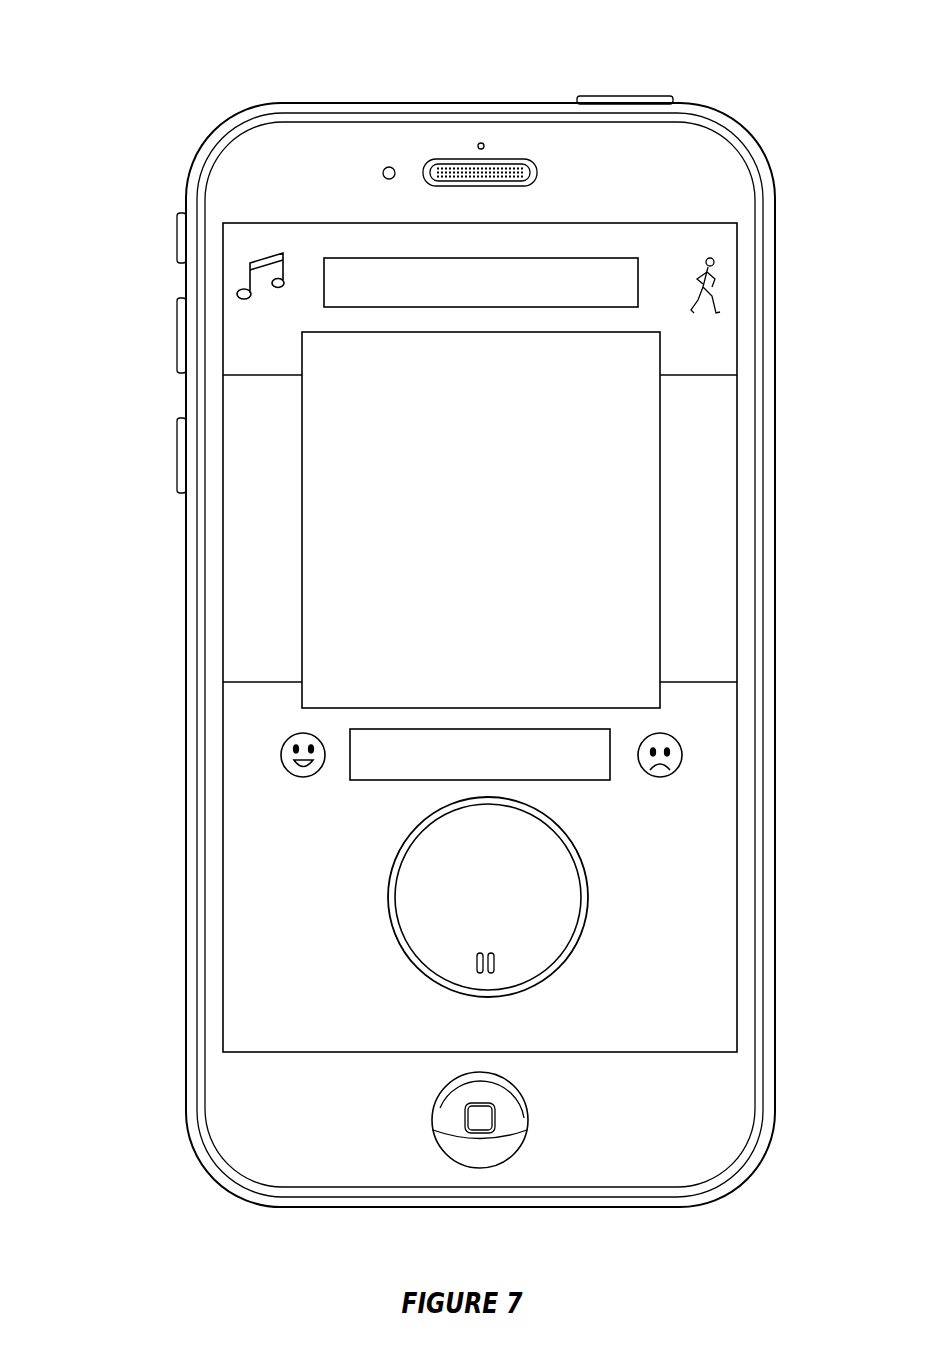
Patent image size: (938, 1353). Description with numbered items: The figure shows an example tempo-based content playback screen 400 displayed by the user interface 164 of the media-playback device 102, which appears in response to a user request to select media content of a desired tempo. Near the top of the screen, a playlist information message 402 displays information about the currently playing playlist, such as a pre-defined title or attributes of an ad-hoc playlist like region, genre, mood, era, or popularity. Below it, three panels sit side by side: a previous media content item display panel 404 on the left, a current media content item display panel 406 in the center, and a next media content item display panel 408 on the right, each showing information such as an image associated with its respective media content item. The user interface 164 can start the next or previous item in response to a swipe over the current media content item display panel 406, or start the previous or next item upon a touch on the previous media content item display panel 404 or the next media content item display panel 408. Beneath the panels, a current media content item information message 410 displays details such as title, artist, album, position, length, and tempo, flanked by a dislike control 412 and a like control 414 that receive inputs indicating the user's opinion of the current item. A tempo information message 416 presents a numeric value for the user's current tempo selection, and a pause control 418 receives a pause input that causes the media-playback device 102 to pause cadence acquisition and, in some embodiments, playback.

The media-playback device 102 is at (133, 45).
The user interface 164 is at (181, 282).
The tempo-based content playback screen 400 is at (645, 222).
The playlist information message 402 is at (396, 257).
The previous media content item display panel 404 is at (239, 553).
The current media content item display panel 406 is at (459, 553).
The next media content item display panel 408 is at (675, 553).
The current media content item information message 410 is at (535, 781).
The dislike control 412 is at (274, 757).
The like control 414 is at (692, 752).
The tempo information message 416 is at (435, 907).
The pause control 418 is at (500, 963).